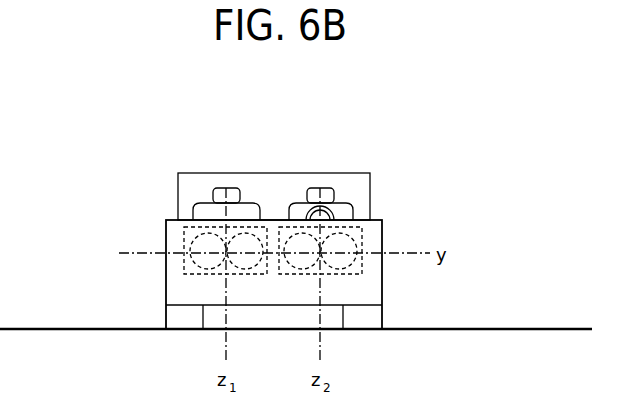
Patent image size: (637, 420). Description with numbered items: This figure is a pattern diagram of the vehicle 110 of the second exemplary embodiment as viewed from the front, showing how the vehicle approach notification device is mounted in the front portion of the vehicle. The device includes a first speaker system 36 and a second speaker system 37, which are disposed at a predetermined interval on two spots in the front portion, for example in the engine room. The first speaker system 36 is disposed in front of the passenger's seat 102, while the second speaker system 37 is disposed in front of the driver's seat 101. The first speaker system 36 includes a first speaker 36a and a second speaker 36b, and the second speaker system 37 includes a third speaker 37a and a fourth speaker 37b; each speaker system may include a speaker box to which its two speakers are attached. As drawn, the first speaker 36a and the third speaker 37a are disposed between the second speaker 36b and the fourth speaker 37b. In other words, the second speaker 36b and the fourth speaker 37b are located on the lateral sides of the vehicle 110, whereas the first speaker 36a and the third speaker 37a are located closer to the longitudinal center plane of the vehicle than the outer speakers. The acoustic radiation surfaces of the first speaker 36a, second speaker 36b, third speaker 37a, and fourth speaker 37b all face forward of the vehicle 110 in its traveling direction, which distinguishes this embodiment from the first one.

The vehicle 110 is at (328, 173).
The driver's seat 101 is at (348, 203).
The passenger's seat 102 is at (200, 204).
The first speaker system 36 is at (191, 213).
The second speaker system 37 is at (346, 213).
The first speaker 36a is at (247, 232).
The third speaker 37a is at (297, 232).
The second speaker 36b is at (192, 243).
The fourth speaker 37b is at (382, 235).